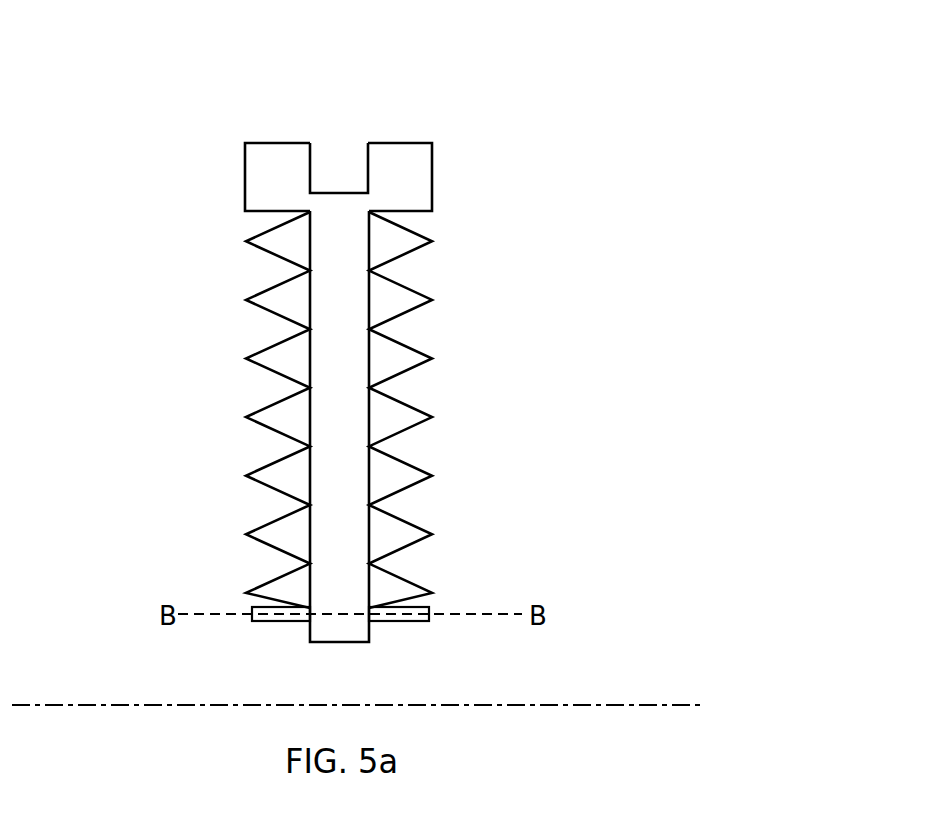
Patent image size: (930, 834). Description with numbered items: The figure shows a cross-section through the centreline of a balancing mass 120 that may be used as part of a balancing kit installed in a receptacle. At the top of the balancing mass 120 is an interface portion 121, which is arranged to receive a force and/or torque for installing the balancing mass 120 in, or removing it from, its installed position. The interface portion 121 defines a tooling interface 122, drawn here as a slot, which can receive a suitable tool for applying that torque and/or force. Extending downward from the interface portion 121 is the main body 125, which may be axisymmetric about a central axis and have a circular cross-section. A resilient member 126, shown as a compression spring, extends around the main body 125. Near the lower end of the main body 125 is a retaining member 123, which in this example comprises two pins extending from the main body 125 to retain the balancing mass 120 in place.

The balancing mass 120 is at (472, 360).
The interface portion 121 is at (427, 180).
The tooling interface 122 is at (365, 155).
The retaining member 123 is at (285, 621).
The main body 125 is at (348, 285).
The resilient member 126 is at (417, 345).